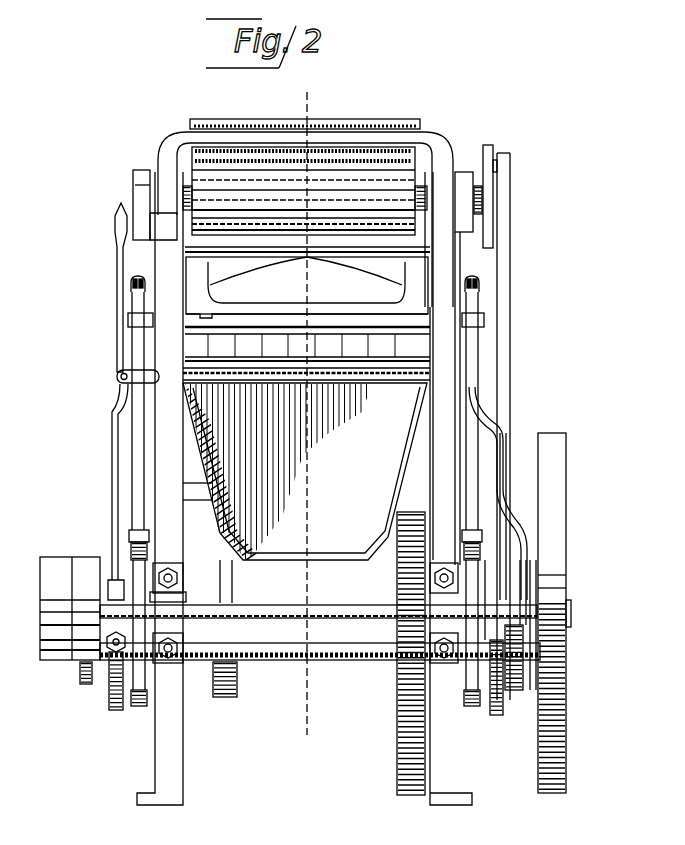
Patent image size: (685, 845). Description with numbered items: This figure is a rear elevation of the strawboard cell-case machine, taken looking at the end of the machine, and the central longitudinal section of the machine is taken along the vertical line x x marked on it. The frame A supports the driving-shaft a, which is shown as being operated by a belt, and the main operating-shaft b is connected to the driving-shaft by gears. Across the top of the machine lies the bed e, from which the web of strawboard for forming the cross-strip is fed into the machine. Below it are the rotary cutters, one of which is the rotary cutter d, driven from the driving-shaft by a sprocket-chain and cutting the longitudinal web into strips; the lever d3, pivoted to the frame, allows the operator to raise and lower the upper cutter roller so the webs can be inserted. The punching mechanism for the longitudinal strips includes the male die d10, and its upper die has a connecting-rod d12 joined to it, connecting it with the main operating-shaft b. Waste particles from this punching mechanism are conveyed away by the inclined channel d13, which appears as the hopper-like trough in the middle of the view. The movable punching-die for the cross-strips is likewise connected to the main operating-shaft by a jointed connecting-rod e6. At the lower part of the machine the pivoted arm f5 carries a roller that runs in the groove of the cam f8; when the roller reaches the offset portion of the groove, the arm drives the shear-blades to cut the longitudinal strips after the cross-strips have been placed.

The section line x is at (301, 410).
The bed e is at (352, 100).
The frame A is at (173, 736).
The male die d10 is at (307, 287).
The rotary cutter d is at (412, 345).
The inclined channel d13 is at (293, 496).
The lever d3 is at (120, 220).
The connecting-rod d12 is at (133, 388).
The connecting-rod e6 is at (138, 468).
The driving-shaft a is at (294, 612).
The main operating-shaft b is at (312, 647).
The pivoted arm f5 is at (223, 567).
The cam f8 is at (230, 697).